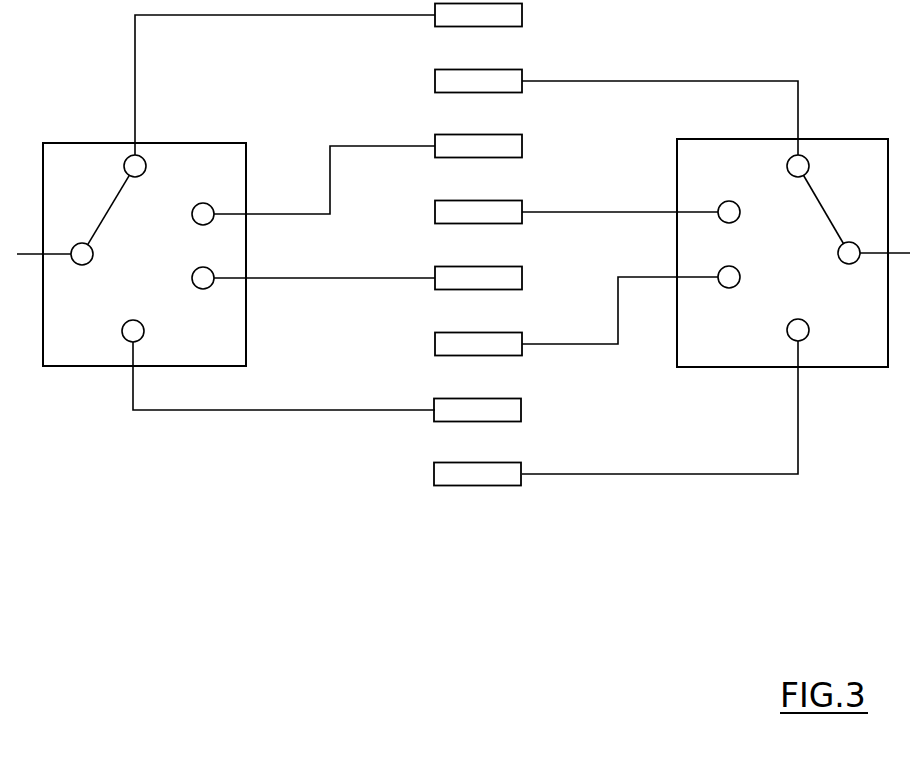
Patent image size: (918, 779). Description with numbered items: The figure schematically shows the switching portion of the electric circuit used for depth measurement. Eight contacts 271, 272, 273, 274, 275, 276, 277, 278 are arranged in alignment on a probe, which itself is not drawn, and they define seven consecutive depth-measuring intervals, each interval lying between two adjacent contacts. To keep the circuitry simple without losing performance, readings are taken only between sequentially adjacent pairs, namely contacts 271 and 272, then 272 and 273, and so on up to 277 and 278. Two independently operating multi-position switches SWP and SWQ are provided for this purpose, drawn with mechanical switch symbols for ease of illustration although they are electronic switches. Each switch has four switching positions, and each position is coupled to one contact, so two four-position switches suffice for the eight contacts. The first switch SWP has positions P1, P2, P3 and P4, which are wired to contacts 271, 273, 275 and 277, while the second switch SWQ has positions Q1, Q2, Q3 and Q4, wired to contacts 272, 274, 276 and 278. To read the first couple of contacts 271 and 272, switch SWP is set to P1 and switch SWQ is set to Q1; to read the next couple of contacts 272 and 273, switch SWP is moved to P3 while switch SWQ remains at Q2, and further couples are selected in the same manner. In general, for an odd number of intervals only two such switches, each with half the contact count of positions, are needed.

The contact 271 is at (523, 15).
The contact 272 is at (435, 81).
The contact 273 is at (523, 146).
The contact 274 is at (435, 212).
The contact 275 is at (523, 278).
The contact 276 is at (435, 344).
The contact 277 is at (521, 410).
The contact 278 is at (434, 474).
The multi-position switch SWP is at (213, 143).
The multi-position switch SWQ is at (727, 368).
The switching position P1 is at (156, 166).
The switching position P2 is at (212, 230).
The switching position P3 is at (212, 292).
The switching position P4 is at (150, 337).
The switching position Q1 is at (822, 168).
The switching position Q2 is at (717, 194).
The switching position Q3 is at (716, 260).
The switching position Q4 is at (777, 337).